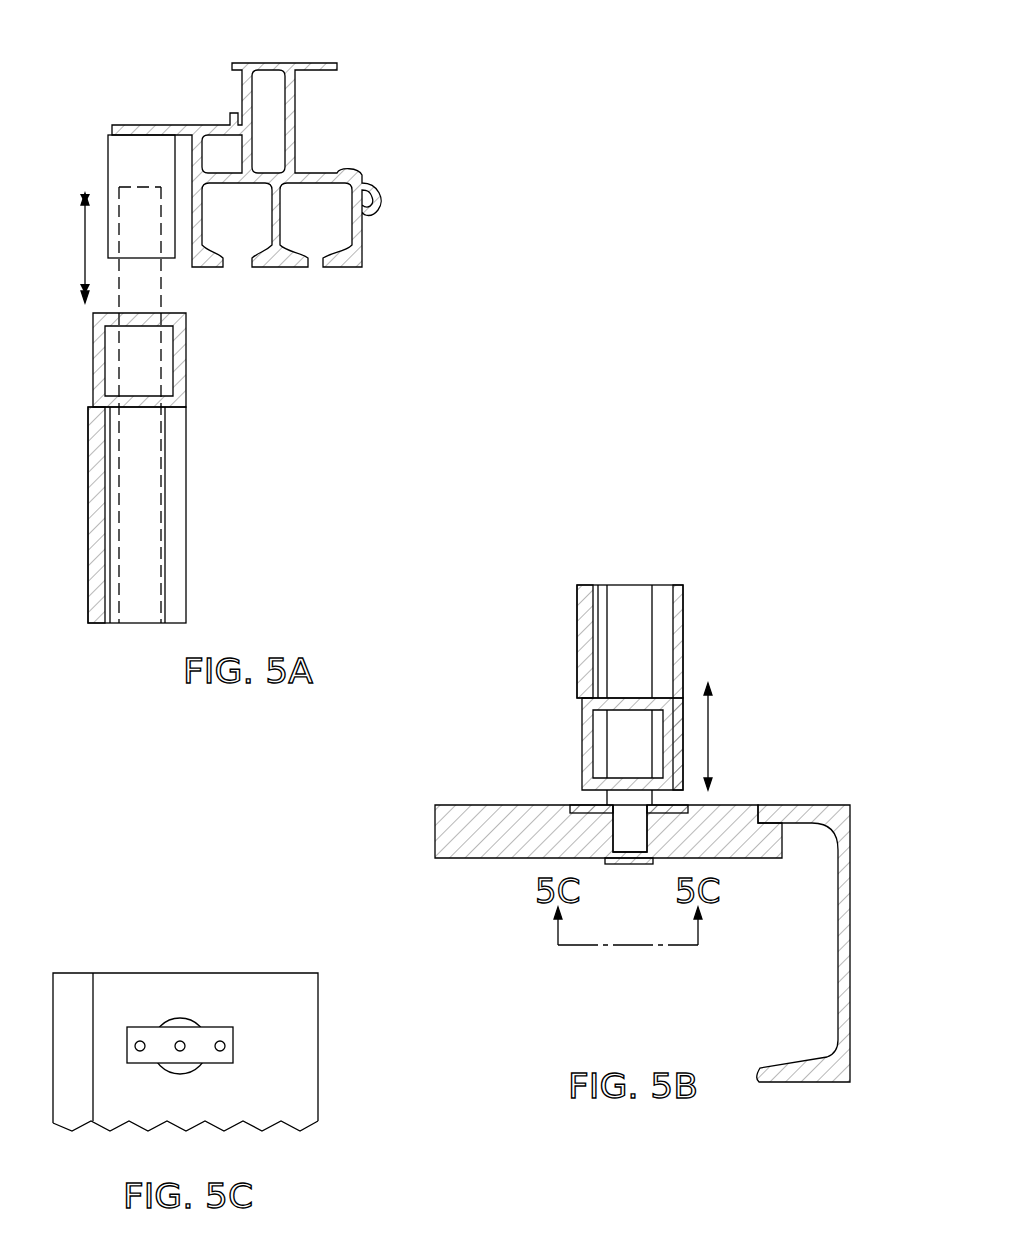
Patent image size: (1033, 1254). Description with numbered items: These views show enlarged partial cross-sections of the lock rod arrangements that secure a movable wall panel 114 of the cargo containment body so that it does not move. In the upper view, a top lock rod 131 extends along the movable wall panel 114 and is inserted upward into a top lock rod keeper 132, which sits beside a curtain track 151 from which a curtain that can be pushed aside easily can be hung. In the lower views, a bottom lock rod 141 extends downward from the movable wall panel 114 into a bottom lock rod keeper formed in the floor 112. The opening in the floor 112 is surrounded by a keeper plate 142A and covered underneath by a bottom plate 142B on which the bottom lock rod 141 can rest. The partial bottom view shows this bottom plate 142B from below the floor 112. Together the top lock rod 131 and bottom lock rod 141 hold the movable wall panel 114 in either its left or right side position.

In FIG. 5B, the floor 112 is at (435, 832).
In FIG. 5A, the movable wall panel 114 is at (88, 522).
In FIG. 5B, the movable wall panel 114 is at (577, 650).
In FIG. 5A, the top lock rod 131 is at (165, 288).
In FIG. 5A, the top lock rod keeper 132 is at (108, 152).
In FIG. 5B, the bottom lock rod 141 is at (607, 798).
In FIG. 5B, the keeper plate 142A is at (583, 816).
In FIG. 5B, the bottom plate 142B is at (627, 864).
In FIG. 5C, the bottom plate 142B is at (233, 1045).
In FIG. 5A, the curtain track 151 is at (352, 190).